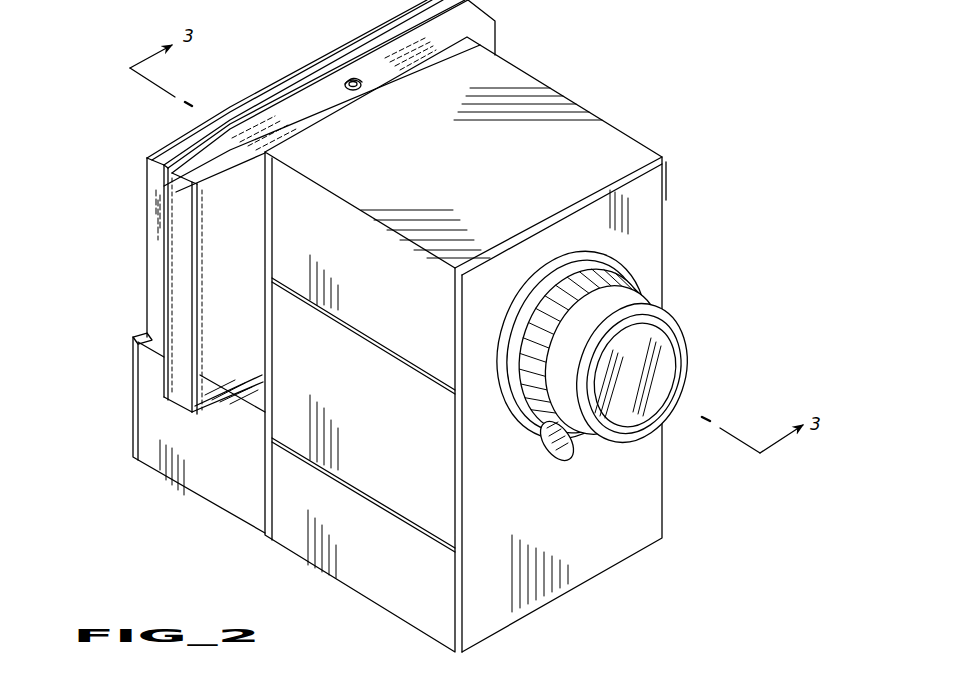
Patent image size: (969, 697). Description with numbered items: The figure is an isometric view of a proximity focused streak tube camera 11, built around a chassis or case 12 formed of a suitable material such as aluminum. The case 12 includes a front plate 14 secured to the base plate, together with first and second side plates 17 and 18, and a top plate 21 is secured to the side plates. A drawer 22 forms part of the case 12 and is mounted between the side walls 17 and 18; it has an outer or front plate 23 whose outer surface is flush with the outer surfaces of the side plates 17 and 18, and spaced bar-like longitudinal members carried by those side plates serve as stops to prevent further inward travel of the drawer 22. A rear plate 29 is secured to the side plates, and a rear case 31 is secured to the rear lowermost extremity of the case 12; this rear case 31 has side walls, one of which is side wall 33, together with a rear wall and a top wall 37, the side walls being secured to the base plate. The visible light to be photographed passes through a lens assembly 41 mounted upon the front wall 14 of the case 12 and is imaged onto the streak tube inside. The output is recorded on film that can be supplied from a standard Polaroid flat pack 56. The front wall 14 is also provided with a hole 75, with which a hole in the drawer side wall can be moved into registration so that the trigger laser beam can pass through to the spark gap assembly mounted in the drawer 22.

The streak tube camera 11 is at (486, 344).
The case 12 is at (667, 185).
The front plate 14 is at (621, 514).
The first side plate 17 is at (386, 584).
The second side plate 18 is at (391, 289).
The top plate 21 is at (546, 181).
The drawer 22 is at (384, 402).
The front plate of drawer 23 is at (392, 439).
The rear plate 29 is at (390, 80).
The rear case 31 is at (173, 433).
The side wall 33 is at (243, 494).
The top wall 37 is at (250, 412).
The lens assembly 41 is at (640, 292).
The Polaroid flat pack 56 is at (143, 181).
The hole 75 is at (573, 452).